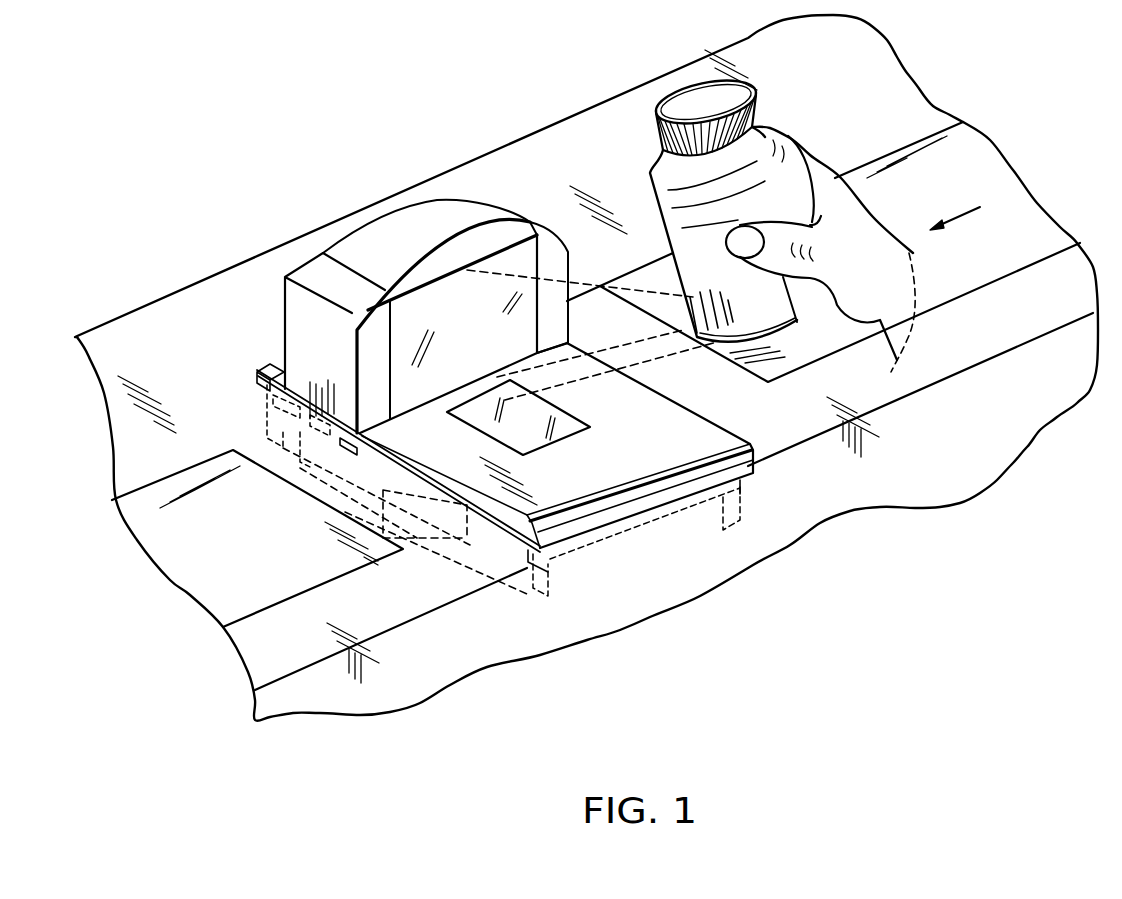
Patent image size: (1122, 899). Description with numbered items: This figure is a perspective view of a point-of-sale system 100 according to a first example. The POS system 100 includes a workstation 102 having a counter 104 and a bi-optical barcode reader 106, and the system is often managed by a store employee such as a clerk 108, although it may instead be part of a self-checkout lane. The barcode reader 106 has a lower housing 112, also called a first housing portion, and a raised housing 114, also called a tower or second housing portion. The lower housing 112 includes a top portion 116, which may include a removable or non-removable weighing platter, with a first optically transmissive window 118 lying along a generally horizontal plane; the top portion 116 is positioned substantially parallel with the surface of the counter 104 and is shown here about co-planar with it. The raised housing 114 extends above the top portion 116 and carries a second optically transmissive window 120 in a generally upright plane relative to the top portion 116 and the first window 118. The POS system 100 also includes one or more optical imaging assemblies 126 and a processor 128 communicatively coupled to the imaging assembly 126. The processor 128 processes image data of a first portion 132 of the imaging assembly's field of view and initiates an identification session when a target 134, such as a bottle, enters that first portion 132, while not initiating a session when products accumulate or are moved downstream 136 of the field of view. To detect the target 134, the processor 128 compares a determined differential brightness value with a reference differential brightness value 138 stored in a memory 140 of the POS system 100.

The point-of-sale (POS) system 100 is at (156, 138).
The workstation 102 is at (543, 105).
The counter 104 is at (889, 56).
The bi-optical barcode reader 106 is at (296, 345).
The clerk 108 is at (893, 263).
The lower housing 112 is at (711, 412).
The raised housing 114 is at (351, 223).
The top portion 116 is at (513, 507).
The first optically transmissive window 118 is at (567, 433).
The second optically transmissive window 120 is at (522, 307).
The optical imaging assembly 126 is at (273, 403).
The processor 128 is at (300, 433).
The first portion 132 is at (417, 302).
The target 134 is at (797, 160).
The downstream 136 is at (187, 548).
The reference differential brightness value 138 is at (362, 443).
The memory 140 is at (330, 455).